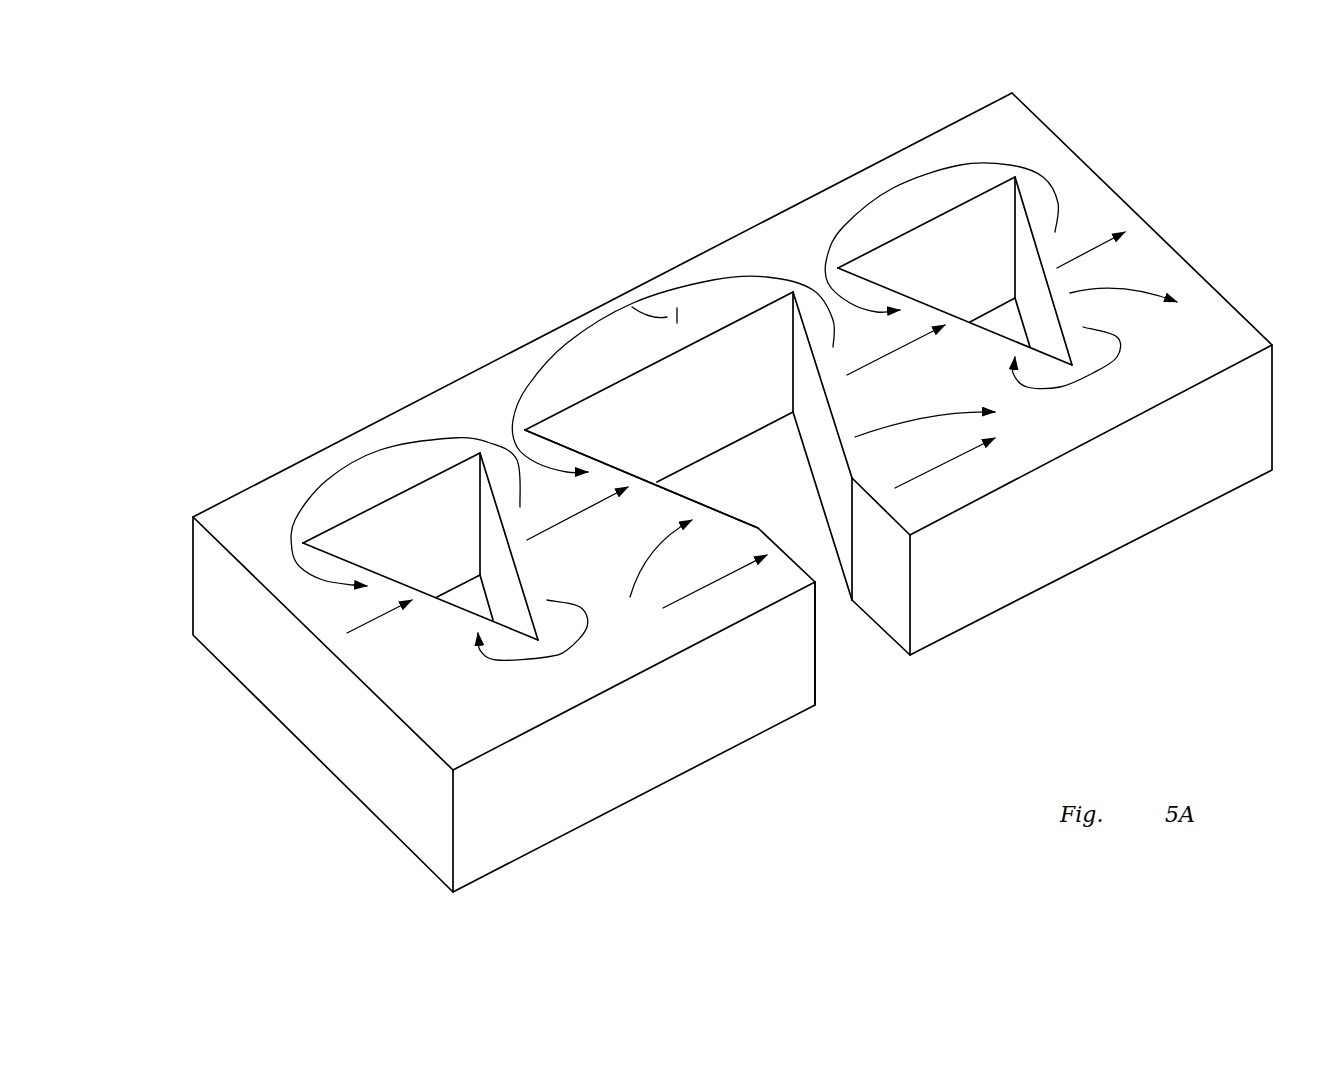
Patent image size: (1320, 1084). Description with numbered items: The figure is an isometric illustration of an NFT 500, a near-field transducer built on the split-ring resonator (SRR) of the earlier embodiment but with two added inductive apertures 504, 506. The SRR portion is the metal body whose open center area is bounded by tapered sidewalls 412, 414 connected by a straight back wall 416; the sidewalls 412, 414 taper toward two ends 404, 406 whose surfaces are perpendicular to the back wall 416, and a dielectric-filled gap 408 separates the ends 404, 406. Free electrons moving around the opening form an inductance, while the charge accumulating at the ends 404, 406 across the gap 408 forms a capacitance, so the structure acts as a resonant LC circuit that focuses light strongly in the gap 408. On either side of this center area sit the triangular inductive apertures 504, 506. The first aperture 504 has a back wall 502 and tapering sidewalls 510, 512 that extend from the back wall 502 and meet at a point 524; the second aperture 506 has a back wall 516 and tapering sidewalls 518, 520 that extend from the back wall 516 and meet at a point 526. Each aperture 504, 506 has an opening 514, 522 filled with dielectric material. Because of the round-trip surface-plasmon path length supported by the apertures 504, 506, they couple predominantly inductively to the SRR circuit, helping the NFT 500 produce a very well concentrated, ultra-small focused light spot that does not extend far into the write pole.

The NFT 500 is at (427, 268).
The back wall 502 is at (395, 520).
The inductive aperture 504 is at (300, 485).
The inductive aperture 506 is at (832, 215).
The tapering sidewall 510 is at (513, 580).
The tapering sidewall 512 is at (407, 585).
The opening 514 is at (465, 600).
The back wall 516 is at (957, 220).
The tapering sidewall 518 is at (1047, 308).
The tapering sidewall 520 is at (942, 310).
The opening 522 is at (993, 327).
The point 524 is at (553, 650).
The point 526 is at (1090, 378).
The end 404 is at (817, 683).
The end 406 is at (897, 638).
The gap 408 is at (872, 667).
The tapered sidewall 412 is at (628, 472).
The tapered sidewall 414 is at (833, 452).
The back wall 416 is at (623, 392).